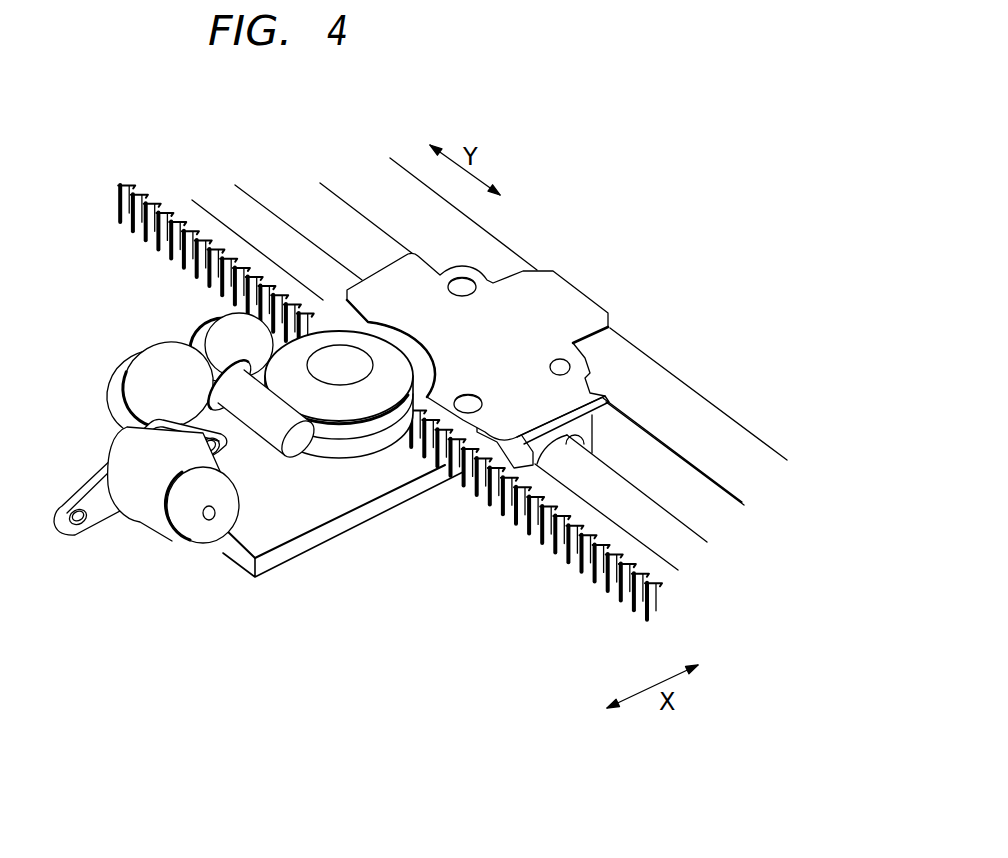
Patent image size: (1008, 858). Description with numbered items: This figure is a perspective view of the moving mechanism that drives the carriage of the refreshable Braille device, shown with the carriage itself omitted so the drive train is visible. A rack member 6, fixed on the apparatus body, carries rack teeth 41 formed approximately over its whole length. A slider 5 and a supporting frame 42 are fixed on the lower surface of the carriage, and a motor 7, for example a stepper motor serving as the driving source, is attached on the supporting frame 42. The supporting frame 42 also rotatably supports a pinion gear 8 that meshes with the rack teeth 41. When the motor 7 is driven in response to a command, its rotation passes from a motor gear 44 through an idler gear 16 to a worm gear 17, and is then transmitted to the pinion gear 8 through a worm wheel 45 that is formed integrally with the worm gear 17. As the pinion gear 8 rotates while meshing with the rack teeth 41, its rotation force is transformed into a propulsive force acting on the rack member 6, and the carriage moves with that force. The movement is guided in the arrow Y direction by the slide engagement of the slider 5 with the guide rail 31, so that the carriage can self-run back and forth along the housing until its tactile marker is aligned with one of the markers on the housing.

The slider 5 is at (562, 300).
The rack member 6 is at (235, 246).
The motor 7 is at (150, 510).
The pinion gear 8 is at (339, 330).
The idler gear 16 is at (123, 395).
The worm gear 17 is at (230, 333).
The guide rail 31 is at (648, 500).
The rack teeth 41 is at (538, 532).
The supporting frame 42 is at (313, 510).
The motor gear 44 is at (97, 443).
The worm wheel 45 is at (275, 428).